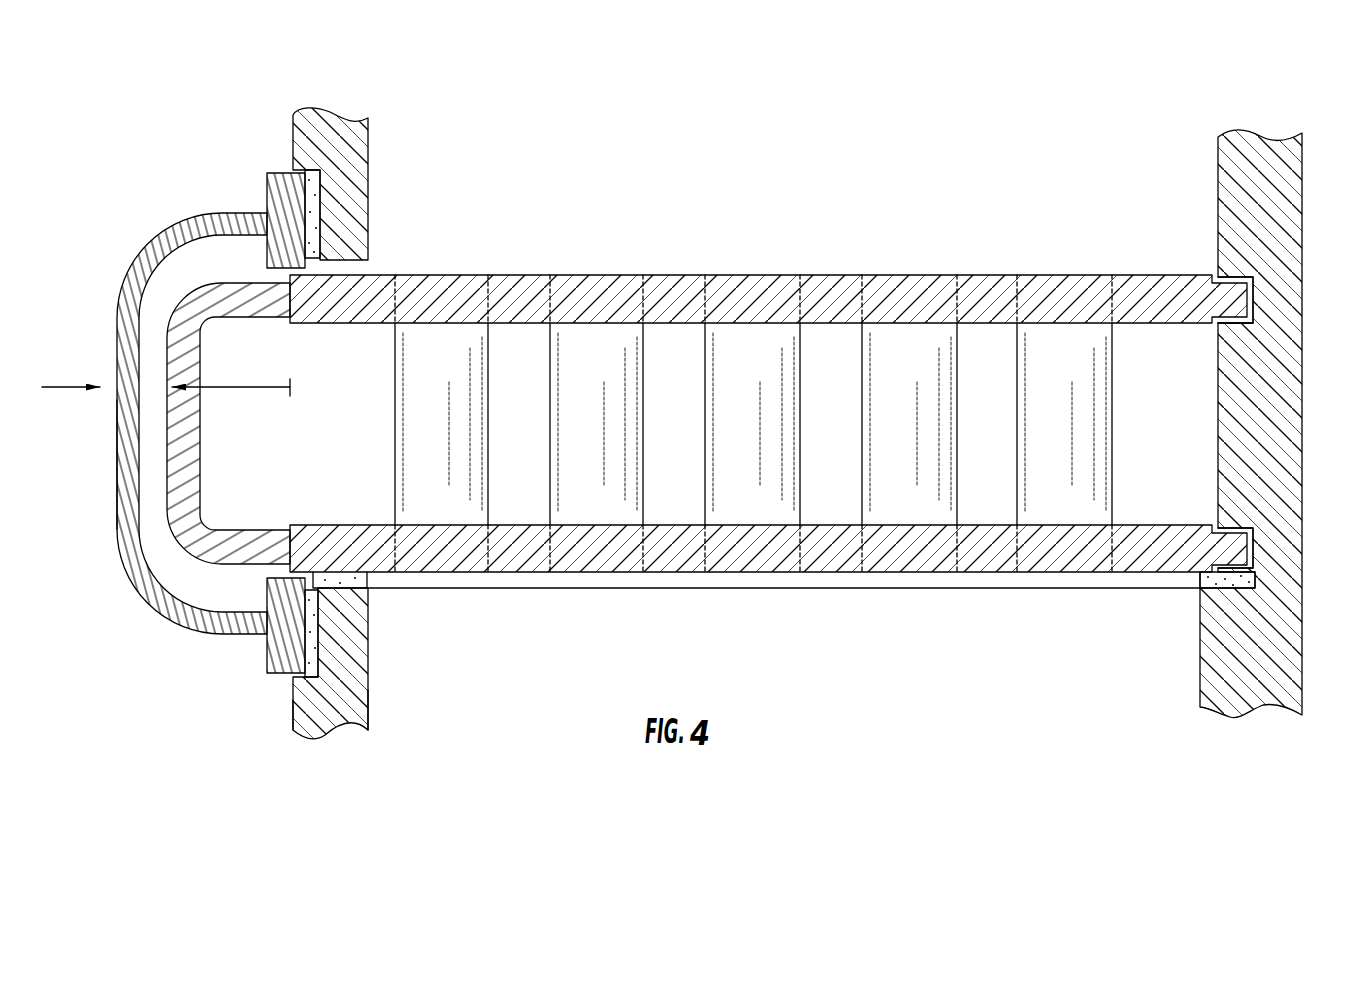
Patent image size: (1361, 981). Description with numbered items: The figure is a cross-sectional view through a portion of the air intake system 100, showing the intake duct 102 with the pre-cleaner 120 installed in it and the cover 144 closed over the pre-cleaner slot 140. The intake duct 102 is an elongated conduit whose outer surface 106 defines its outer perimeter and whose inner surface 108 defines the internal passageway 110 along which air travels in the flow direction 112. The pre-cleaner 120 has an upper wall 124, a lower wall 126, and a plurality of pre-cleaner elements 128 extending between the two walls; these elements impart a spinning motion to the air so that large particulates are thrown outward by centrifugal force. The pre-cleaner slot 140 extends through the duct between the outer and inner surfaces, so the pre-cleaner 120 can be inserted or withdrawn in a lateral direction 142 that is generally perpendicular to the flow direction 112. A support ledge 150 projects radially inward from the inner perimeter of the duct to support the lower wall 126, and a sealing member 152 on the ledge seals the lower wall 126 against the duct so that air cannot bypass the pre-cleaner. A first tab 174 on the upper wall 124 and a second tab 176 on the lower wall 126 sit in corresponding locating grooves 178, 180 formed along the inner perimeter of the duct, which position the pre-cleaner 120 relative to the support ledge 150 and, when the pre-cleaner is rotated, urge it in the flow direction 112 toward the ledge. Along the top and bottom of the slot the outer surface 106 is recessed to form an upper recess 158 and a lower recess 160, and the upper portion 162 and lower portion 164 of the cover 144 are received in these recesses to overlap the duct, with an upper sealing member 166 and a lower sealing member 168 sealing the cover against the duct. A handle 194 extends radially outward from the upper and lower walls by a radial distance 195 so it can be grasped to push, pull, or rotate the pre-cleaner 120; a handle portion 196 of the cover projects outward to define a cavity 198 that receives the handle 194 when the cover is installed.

The air intake system 100 is at (130, 146).
The intake duct 102 is at (1243, 128).
The outer surface 106 is at (293, 710).
The inner surface 108 is at (372, 698).
The internal passageway 110 is at (1018, 142).
The flow direction 112 is at (772, 173).
The pre-cleaner 120 is at (768, 265).
The upper wall 124 is at (682, 298).
The lower wall 126 is at (850, 553).
The pre-cleaner elements 128 is at (578, 438).
The pre-cleaner slot 140 is at (374, 352).
The lateral direction 142 is at (72, 383).
The cover 144 is at (130, 250).
The support ledge 150 is at (759, 617).
The sealing member 152 is at (1048, 585).
The upper recess 158 is at (320, 192).
The lower recess 160 is at (320, 628).
The upper portion 162 is at (280, 196).
The lower portion 164 is at (283, 650).
The upper sealing member 166 is at (311, 209).
The lower sealing member 168 is at (313, 658).
The first tab 174 is at (1243, 298).
The second tab 176 is at (1237, 553).
The locating groove 178 is at (1247, 324).
The locating groove 180 is at (1258, 560).
The handle 194 is at (193, 444).
The radial distance 195 is at (222, 394).
The handle portion 196 is at (122, 478).
The cavity 198 is at (148, 496).